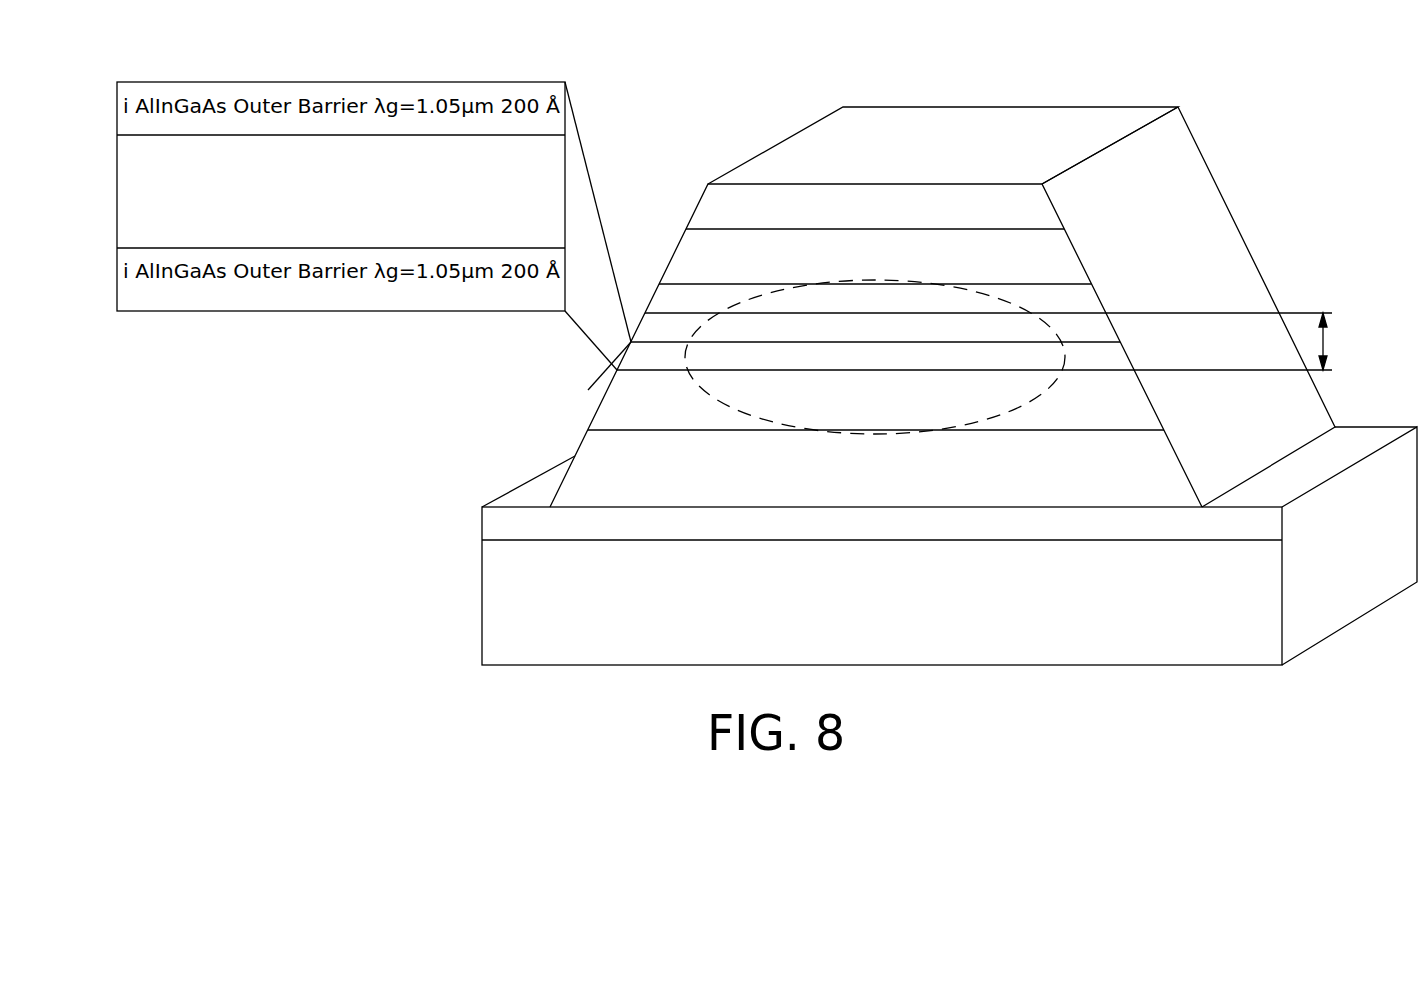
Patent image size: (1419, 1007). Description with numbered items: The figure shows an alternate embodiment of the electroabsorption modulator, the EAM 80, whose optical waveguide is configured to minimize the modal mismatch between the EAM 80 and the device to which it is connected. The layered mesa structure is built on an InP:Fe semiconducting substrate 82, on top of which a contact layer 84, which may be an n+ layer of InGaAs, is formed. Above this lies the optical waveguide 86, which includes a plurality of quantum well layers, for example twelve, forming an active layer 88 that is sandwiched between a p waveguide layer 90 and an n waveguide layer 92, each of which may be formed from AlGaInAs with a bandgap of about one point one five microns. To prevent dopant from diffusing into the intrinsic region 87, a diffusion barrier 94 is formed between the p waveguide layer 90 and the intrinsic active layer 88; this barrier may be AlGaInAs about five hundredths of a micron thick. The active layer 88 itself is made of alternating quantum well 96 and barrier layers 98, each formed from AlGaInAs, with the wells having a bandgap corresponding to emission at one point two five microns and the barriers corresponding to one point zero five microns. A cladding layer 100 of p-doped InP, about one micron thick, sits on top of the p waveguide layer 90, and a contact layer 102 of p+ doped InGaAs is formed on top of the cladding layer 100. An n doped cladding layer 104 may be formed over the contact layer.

The EAM 80 is at (991, 87).
The InP:Fe semiconducting substrate 82 is at (482, 593).
The contact layer 84 is at (482, 529).
The optical waveguide 86 is at (627, 331).
The intrinsic region 87 is at (1338, 341).
The active layer 88 is at (625, 357).
The p waveguide layer 90 is at (652, 297).
The n waveguide layer 92 is at (597, 411).
The diffusion barrier 94 is at (1105, 329).
The quantum well 96 is at (117, 232).
The barrier layers 98 is at (117, 176).
The cladding layer 100 is at (678, 244).
The contact layer 102 is at (689, 212).
The n doped cladding layer 104 is at (575, 455).